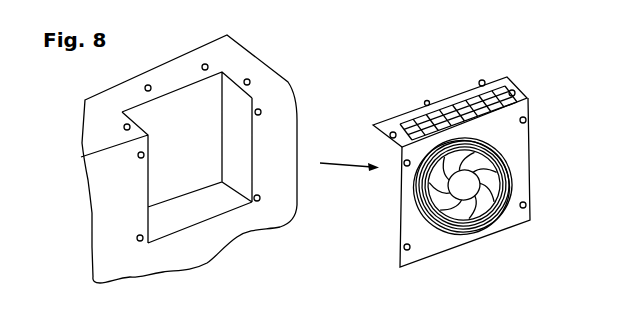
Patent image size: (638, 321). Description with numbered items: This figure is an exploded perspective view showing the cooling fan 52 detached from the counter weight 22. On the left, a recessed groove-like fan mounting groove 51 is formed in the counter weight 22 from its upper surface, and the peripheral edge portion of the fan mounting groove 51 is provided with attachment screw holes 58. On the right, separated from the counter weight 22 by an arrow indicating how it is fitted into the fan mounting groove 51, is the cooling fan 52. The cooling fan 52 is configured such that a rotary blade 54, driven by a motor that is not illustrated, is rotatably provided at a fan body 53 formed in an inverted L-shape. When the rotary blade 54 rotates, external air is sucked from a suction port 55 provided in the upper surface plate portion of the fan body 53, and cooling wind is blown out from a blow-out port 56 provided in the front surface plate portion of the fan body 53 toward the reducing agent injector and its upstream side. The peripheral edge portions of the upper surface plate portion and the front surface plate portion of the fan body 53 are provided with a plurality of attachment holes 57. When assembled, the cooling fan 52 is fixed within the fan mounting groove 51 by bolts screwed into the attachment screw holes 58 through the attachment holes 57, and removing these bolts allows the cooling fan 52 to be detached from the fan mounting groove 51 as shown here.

The counter weight 22 is at (262, 72).
The fan mounting groove 51 is at (193, 105).
The attachment screw holes 58 is at (150, 85).
The cooling fan 52 is at (506, 72).
The fan body 53 is at (523, 145).
The rotary blade 54 is at (495, 170).
The suction port 55 is at (462, 93).
The blow-out port 56 is at (512, 188).
The attachment holes 57 is at (426, 101).